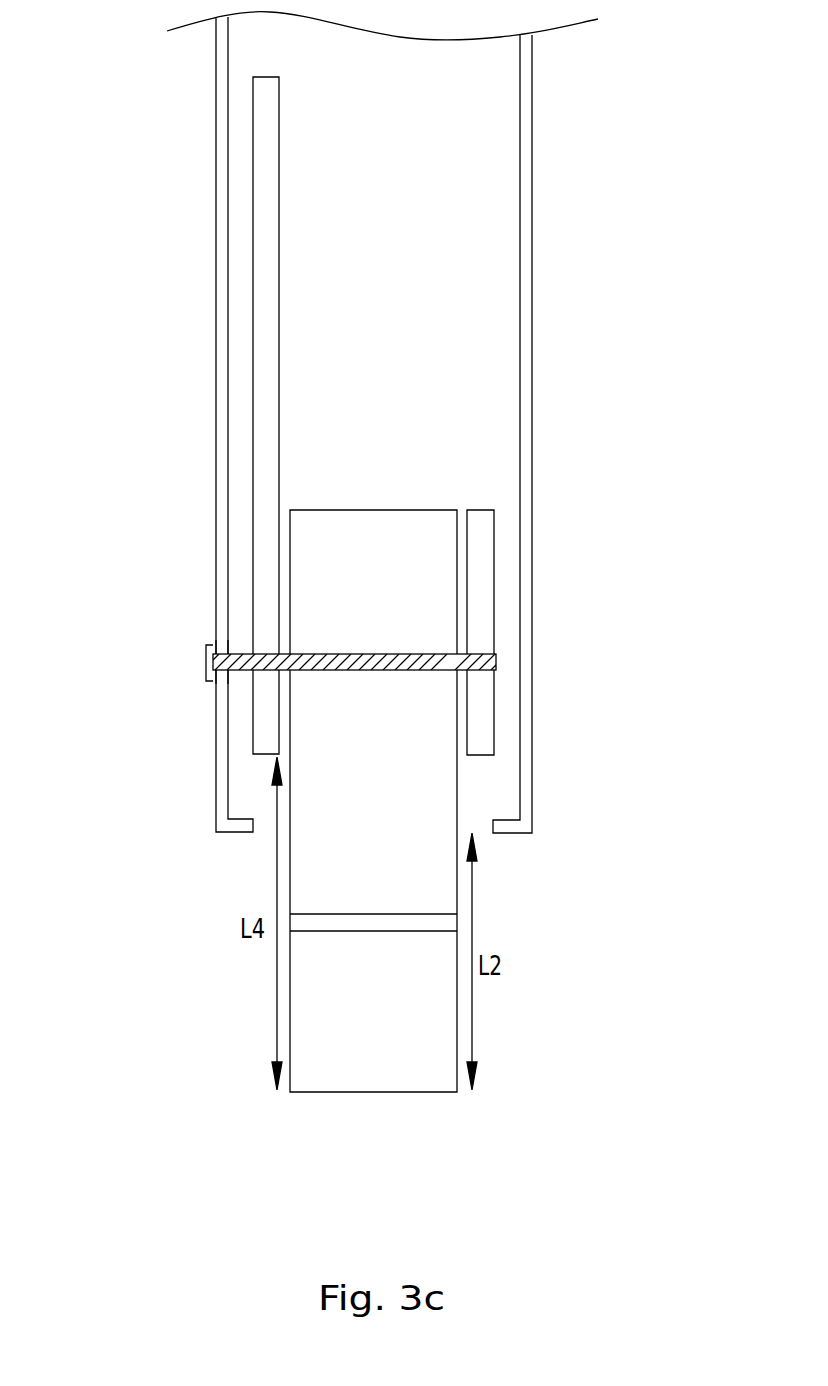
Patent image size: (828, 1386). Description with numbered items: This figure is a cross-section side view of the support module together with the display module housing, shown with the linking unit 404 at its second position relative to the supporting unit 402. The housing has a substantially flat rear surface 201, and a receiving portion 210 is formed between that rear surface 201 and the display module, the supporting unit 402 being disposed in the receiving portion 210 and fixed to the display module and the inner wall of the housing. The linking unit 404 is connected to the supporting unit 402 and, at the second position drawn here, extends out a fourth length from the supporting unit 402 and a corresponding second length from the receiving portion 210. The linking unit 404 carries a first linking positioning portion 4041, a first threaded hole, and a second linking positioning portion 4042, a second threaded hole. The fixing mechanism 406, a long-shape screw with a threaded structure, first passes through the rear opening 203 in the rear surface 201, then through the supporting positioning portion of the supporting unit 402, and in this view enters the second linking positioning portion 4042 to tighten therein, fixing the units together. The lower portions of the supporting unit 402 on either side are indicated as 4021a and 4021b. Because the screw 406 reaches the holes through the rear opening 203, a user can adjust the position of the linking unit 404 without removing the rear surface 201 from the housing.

The rear surface 201 is at (222, 233).
The receiving portion 210 is at (485, 200).
The rear opening 203 is at (222, 648).
The supporting unit 402 is at (263, 133).
The lower portion of left guide bar 4021a is at (265, 673).
The lower portion of right guide bar 4021b is at (477, 673).
The linking unit 404 is at (327, 527).
The first linking positioning portion 4041 is at (412, 920).
The second linking positioning portion 4042 is at (323, 655).
The fixing mechanism 406 is at (205, 657).